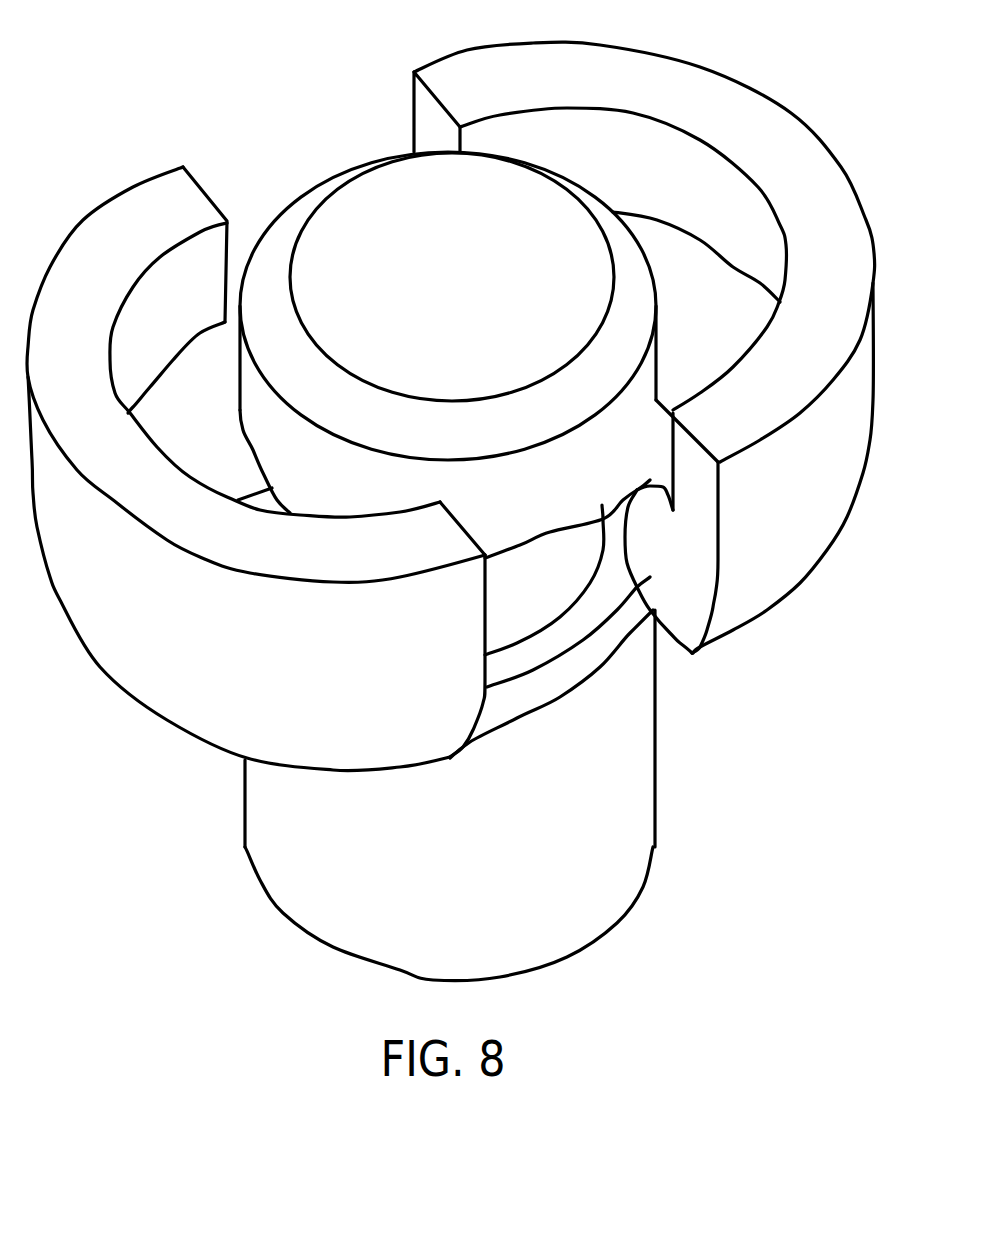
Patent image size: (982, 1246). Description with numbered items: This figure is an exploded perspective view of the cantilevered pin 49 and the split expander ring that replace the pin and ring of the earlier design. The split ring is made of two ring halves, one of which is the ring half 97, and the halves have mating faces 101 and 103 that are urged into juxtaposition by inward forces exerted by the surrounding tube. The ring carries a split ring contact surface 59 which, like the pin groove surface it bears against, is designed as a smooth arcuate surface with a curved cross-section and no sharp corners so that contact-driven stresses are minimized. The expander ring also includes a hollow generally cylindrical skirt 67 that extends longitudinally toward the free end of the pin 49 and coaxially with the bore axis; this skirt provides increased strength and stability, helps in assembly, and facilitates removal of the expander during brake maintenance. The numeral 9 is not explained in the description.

The ring segment 9 is at (613, 353).
The cantilevered pin 49 is at (650, 808).
The split ring contact surface 59 is at (762, 595).
The hollow generally cylindrical skirt 67 is at (200, 187).
The ring half 97 is at (256, 434).
The mating face 101 is at (230, 247).
The mating face 103 is at (412, 90).